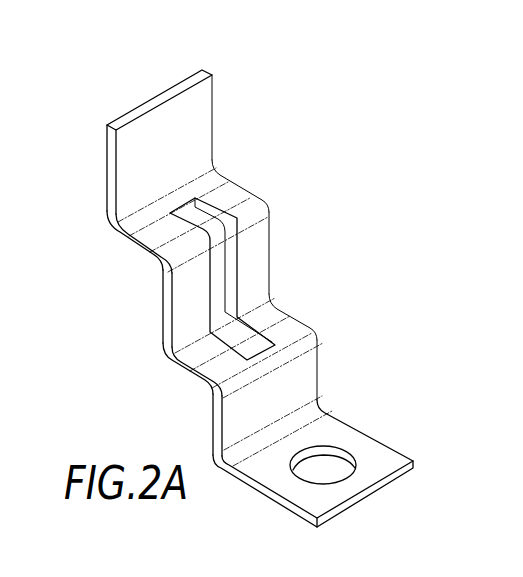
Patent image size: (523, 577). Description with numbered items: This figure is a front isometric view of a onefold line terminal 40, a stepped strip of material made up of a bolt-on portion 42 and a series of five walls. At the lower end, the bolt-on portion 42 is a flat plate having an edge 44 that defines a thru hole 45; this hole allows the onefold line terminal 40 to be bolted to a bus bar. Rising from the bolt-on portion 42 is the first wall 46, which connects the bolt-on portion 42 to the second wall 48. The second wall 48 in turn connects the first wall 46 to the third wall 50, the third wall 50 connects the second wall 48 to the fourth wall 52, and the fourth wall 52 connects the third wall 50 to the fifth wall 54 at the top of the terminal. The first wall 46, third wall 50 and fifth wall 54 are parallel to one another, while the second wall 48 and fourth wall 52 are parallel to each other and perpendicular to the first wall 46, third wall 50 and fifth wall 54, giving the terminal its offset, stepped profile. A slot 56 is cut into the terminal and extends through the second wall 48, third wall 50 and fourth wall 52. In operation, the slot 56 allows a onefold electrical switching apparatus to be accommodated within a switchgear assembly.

The onefold line terminal 40 is at (116, 284).
The bolt-on portion 42 is at (327, 427).
The edge 44 is at (343, 452).
The thru hole 45 is at (310, 475).
The first wall 46 is at (303, 370).
The second wall 48 is at (280, 317).
The third wall 50 is at (260, 243).
The fourth wall 52 is at (228, 188).
The fifth wall 54 is at (197, 108).
The slot 56 is at (217, 285).